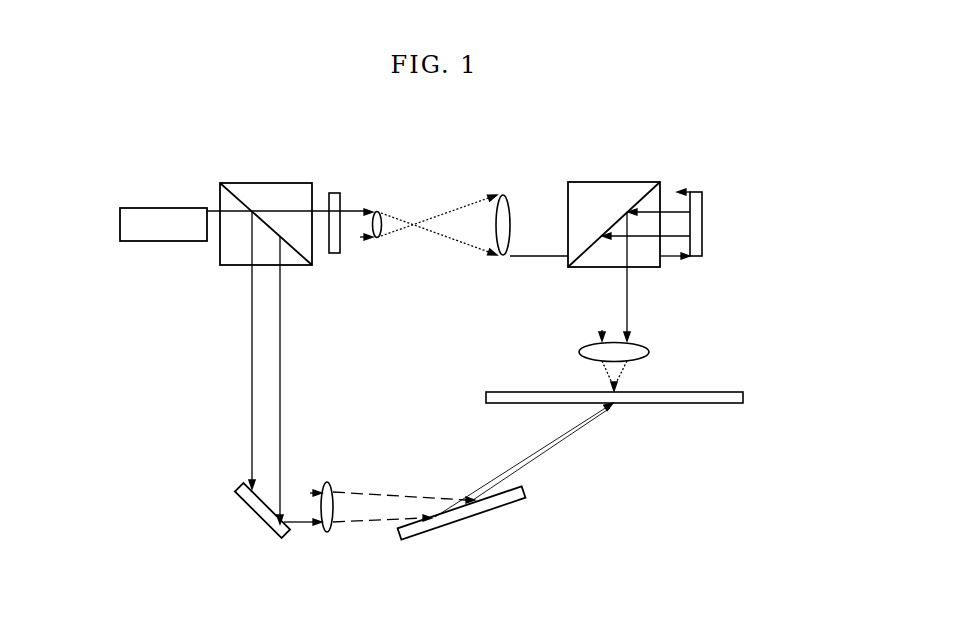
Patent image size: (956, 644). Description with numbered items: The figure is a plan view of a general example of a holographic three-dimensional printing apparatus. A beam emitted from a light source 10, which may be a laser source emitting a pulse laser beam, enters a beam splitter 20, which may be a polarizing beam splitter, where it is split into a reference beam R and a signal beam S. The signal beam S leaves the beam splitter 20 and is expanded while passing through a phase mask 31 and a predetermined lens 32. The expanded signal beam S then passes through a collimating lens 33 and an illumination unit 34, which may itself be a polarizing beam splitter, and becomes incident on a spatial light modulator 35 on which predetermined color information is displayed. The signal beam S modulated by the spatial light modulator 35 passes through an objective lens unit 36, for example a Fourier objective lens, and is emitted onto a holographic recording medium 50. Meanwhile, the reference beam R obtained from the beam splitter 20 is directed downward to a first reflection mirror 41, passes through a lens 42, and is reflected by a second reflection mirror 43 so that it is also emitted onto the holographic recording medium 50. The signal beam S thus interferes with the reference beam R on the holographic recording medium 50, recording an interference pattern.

The light source 10 is at (163, 208).
The beam splitter 20 is at (266, 183).
The phase mask 31 is at (333, 193).
The lens 32 is at (377, 211).
The collimating lens 33 is at (503, 195).
The illumination unit 34 is at (615, 182).
The spatial light modulator 35 is at (697, 192).
The objective lens unit 36 is at (649, 352).
The first reflection mirror 41 is at (255, 518).
The lens 42 is at (327, 532).
The second reflection mirror 43 is at (497, 508).
The holographic recording medium 50 is at (703, 403).
The signal beam S is at (319, 238).
The reference beam R is at (252, 352).